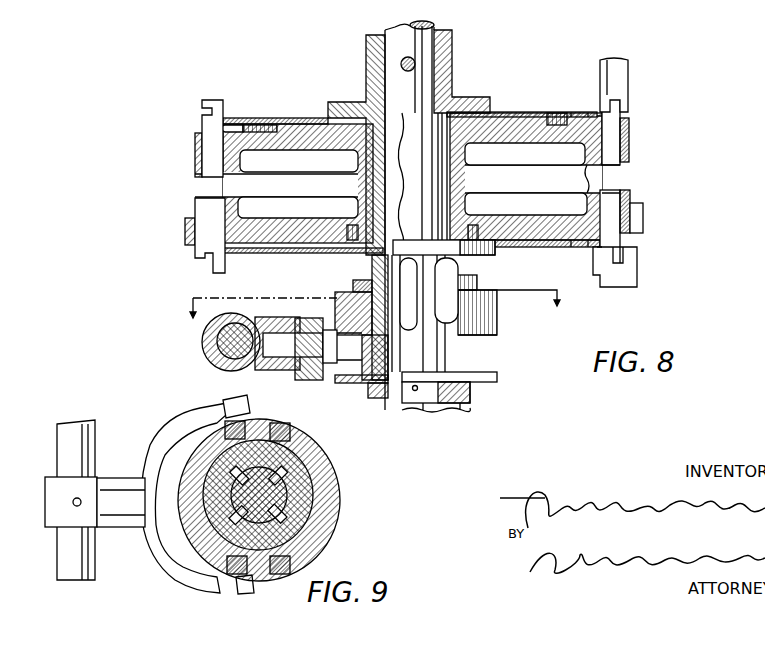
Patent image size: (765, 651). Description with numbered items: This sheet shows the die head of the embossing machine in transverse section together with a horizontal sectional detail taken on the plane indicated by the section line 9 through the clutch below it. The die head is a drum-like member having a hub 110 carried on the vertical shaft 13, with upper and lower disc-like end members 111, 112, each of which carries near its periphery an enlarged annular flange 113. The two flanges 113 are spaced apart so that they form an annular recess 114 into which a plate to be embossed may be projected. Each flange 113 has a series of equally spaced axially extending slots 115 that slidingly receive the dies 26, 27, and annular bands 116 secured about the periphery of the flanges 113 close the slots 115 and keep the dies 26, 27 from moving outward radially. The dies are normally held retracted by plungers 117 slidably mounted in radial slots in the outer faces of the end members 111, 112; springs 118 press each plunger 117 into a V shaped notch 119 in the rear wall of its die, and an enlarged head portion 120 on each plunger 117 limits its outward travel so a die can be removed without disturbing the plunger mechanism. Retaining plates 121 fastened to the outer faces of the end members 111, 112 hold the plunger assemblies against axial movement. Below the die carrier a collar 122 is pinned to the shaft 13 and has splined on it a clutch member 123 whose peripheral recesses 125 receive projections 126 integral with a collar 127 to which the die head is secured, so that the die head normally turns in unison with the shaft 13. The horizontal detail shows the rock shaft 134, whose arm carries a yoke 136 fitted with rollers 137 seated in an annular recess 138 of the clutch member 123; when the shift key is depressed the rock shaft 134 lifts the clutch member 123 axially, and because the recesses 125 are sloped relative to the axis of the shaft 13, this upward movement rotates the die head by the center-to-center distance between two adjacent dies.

In FIG. 8, the shaft 13 is at (437, 28).
In FIG. 9, the shaft 13 is at (290, 482).
In FIG. 8, the die 26 is at (622, 115).
In FIG. 8, the die 27 is at (625, 240).
In FIG. 8, the hub 110 is at (462, 185).
In FIG. 8, the upper end member 111 is at (447, 55).
In FIG. 8, the lower end member 112 is at (505, 217).
In FIG. 8, the annular flange 113 is at (590, 176).
In FIG. 8, the annular recess 114 is at (615, 177).
In FIG. 8, the axially extending slot 115 is at (630, 150).
In FIG. 8, the annular band 116 is at (630, 135).
In FIG. 8, the plunger 117 is at (589, 112).
In FIG. 8, the spring 118 is at (584, 100).
In FIG. 8, the V shaped notch 119 is at (604, 80).
In FIG. 8, the head portion 120 is at (564, 126).
In FIG. 8, the retaining plate 121 is at (540, 113).
In FIG. 8, the collar 122 is at (372, 268).
In FIG. 9, the collar 122 is at (315, 515).
In FIG. 8, the clutch member 123 is at (497, 323).
In FIG. 8, the peripheral recess 125 is at (498, 300).
In FIG. 9, the peripheral recess 125 is at (312, 437).
In FIG. 8, the projection 126 is at (477, 282).
In FIG. 9, the projection 126 is at (303, 424).
In FIG. 8, the collar 127 is at (358, 252).
In FIG. 8, the rock shaft 134 is at (208, 352).
In FIG. 9, the rock shaft 134 is at (90, 440).
In FIG. 9, the yoke 136 is at (188, 418).
In FIG. 9, the roller 137 is at (237, 415).
In FIG. 8, the annular recess 138 is at (480, 366).
In FIG. 8, the section line 9 is at (374, 313).